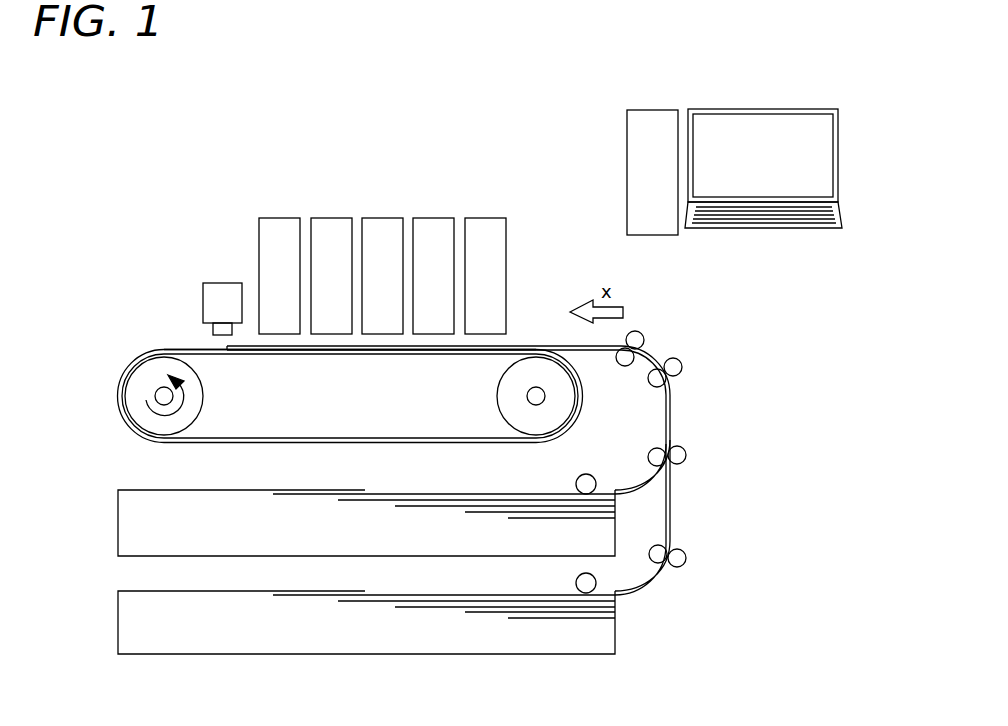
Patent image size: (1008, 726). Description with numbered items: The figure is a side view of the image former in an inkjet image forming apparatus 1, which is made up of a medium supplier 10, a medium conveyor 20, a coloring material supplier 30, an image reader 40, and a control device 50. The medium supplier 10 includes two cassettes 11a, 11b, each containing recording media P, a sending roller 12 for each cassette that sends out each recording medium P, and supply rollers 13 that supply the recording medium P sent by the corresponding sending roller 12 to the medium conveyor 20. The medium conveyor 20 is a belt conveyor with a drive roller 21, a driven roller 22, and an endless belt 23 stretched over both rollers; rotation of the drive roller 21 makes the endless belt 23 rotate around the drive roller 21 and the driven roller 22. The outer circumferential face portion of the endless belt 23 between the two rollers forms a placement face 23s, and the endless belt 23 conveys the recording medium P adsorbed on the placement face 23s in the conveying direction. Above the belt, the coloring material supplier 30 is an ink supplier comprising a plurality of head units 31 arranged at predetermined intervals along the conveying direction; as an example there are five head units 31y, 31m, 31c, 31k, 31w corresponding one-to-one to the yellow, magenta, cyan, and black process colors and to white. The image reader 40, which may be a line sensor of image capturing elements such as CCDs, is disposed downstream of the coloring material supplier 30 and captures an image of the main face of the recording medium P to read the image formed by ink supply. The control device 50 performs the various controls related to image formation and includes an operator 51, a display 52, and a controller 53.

The image forming apparatus 1 is at (315, 67).
The medium supplier 10 is at (388, 496).
The cassette 11a is at (118, 620).
The cassette 11b is at (118, 520).
The sending roller 12 is at (592, 476).
The supply roller 13 is at (642, 332).
The medium conveyor 20 is at (327, 385).
The drive roller 21 is at (203, 396).
The driven roller 22 is at (497, 396).
The endless belt 23 is at (378, 443).
The placement face 23s is at (178, 335).
The coloring material supplier 30 is at (516, 128).
The head unit 31 is at (382, 229).
The head unit 31w is at (280, 218).
The head unit 31k is at (330, 218).
The head unit 31c is at (385, 218).
The head unit 31m is at (435, 218).
The head unit 31y is at (487, 218).
The image reader 40 is at (222, 283).
The control device 50 is at (754, 136).
The operator 51 is at (842, 220).
The display 52 is at (838, 150).
The controller 53 is at (653, 110).
The recording medium P is at (512, 346).